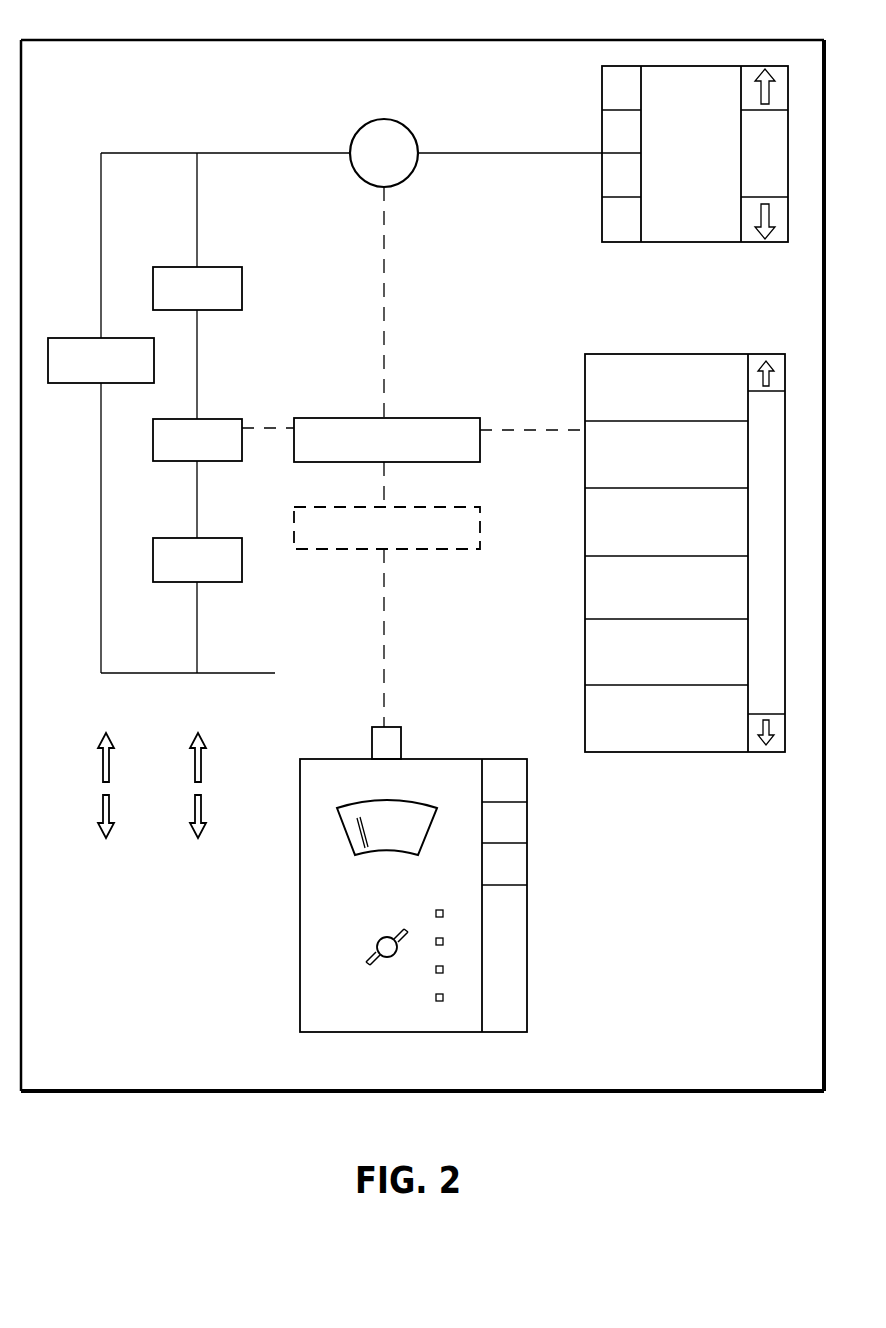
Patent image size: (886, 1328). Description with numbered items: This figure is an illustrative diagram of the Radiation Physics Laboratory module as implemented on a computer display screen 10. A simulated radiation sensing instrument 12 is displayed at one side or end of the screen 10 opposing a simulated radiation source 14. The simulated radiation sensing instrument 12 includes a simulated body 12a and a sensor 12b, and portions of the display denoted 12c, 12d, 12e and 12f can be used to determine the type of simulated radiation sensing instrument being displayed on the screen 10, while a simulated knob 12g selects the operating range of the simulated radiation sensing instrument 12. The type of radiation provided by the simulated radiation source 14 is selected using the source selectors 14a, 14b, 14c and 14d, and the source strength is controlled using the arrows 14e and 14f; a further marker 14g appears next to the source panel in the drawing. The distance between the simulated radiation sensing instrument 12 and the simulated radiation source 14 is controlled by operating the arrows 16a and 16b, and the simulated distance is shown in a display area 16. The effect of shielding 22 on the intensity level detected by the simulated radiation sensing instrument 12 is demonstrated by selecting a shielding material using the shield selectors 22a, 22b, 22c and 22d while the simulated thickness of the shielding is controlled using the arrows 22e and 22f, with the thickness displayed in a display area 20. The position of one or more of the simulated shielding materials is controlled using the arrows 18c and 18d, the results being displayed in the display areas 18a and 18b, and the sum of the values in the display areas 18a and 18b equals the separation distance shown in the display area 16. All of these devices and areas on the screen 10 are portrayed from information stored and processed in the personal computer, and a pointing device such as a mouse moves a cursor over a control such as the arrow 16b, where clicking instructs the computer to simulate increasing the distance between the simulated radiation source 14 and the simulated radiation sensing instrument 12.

The computer display screen 10 is at (67, 87).
The simulated radiation sensing instrument 12 is at (289, 920).
The simulated body 12a is at (350, 1018).
The sensor 12b is at (402, 745).
The display portion 12c is at (527, 791).
The display portion 12d is at (527, 833).
The display portion 12e is at (527, 877).
The display portion 12f is at (527, 981).
The simulated knob 12g is at (377, 944).
The simulated radiation source 14 is at (386, 120).
The source selector 14a is at (600, 84).
The source selector 14b is at (600, 130).
The source selector 14c is at (600, 171).
The source selector 14d is at (600, 214).
The arrow 14e is at (686, 237).
The arrow 14f is at (788, 66).
The down scroll key 14g is at (788, 242).
The display area 16 is at (76, 338).
The arrow 16a is at (97, 747).
The arrow 16b is at (97, 828).
The display area 18a is at (243, 297).
The display area 18b is at (252, 514).
The arrow 18c is at (202, 763).
The arrow 18d is at (202, 830).
The display area 20 is at (243, 418).
The shielding 22 is at (433, 462).
The shield selector 22a is at (616, 354).
The shield selector 22b is at (585, 456).
The shield selector 22c is at (585, 520).
The shield selector 22d is at (585, 592).
The arrow 22e is at (766, 354).
The arrow 22f is at (765, 752).